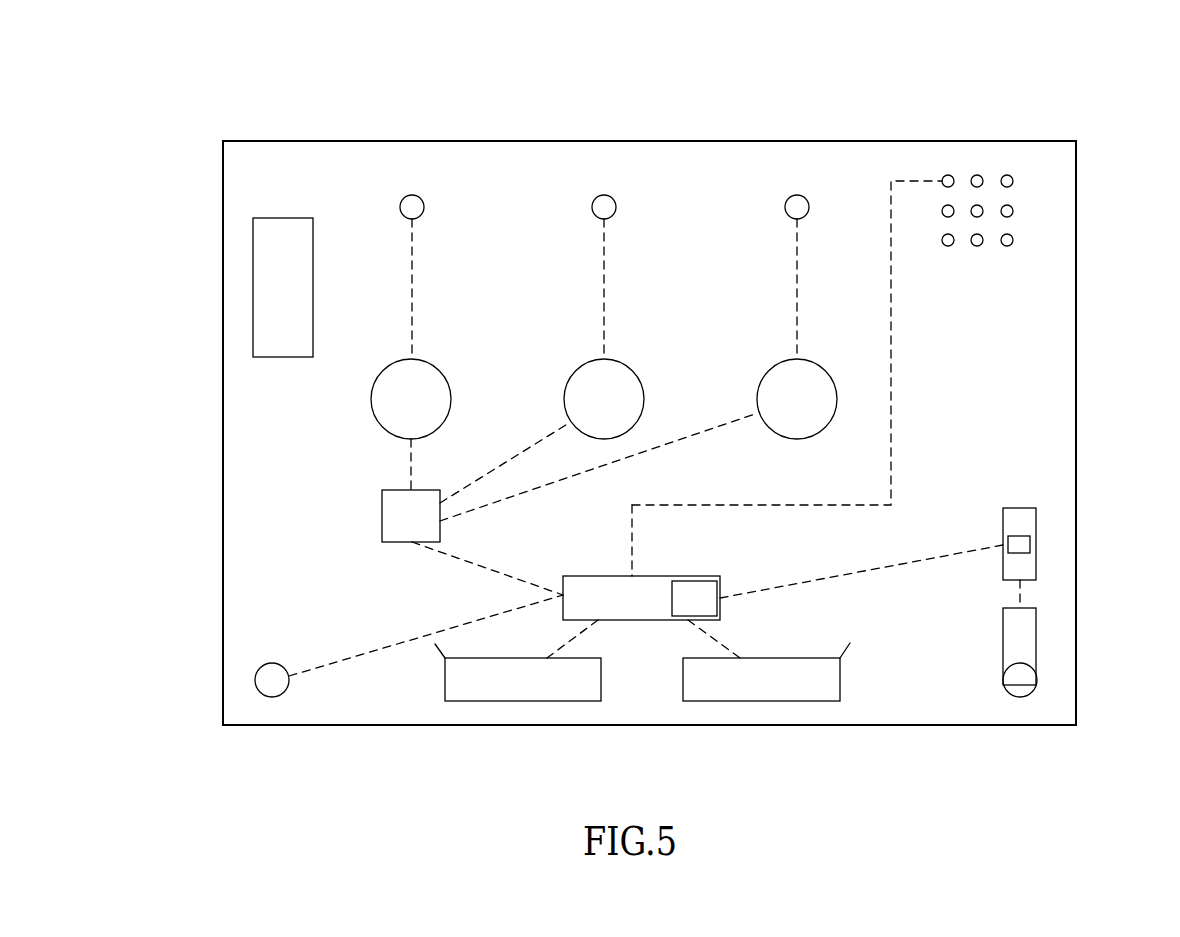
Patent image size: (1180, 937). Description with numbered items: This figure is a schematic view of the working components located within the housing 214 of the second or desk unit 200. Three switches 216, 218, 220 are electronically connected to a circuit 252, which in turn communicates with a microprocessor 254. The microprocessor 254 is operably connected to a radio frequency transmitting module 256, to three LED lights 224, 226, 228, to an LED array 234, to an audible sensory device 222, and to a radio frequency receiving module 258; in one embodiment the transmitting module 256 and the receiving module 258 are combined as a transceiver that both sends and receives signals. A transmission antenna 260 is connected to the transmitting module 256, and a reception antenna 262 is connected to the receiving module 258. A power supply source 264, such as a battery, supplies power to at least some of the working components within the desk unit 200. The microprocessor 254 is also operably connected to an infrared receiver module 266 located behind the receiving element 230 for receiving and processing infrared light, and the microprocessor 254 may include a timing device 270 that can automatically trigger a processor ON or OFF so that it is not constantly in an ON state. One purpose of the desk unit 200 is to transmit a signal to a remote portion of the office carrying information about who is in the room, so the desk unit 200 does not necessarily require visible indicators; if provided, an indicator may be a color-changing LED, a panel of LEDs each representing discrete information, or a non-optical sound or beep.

The desk unit 200 is at (1058, 93).
The housing 214 is at (1076, 210).
The switch 216 is at (372, 394).
The switch 218 is at (567, 382).
The switch 220 is at (762, 370).
The audible sensory device 222 is at (281, 697).
The LED light 224 is at (412, 195).
The LED light 226 is at (604, 195).
The LED light 228 is at (797, 195).
The receiving element 230 is at (1037, 686).
The LED array 234 is at (977, 173).
The circuit 252 is at (382, 512).
The microprocessor 254 is at (620, 620).
The radio frequency transmitting module 256 is at (500, 701).
The radio frequency receiving module 258 is at (762, 701).
The transmission antenna 260 is at (437, 648).
The reception antenna 262 is at (842, 656).
The power supply source 264 is at (253, 298).
The infrared receiver module 266 is at (1036, 640).
The timing device 270 is at (672, 600).